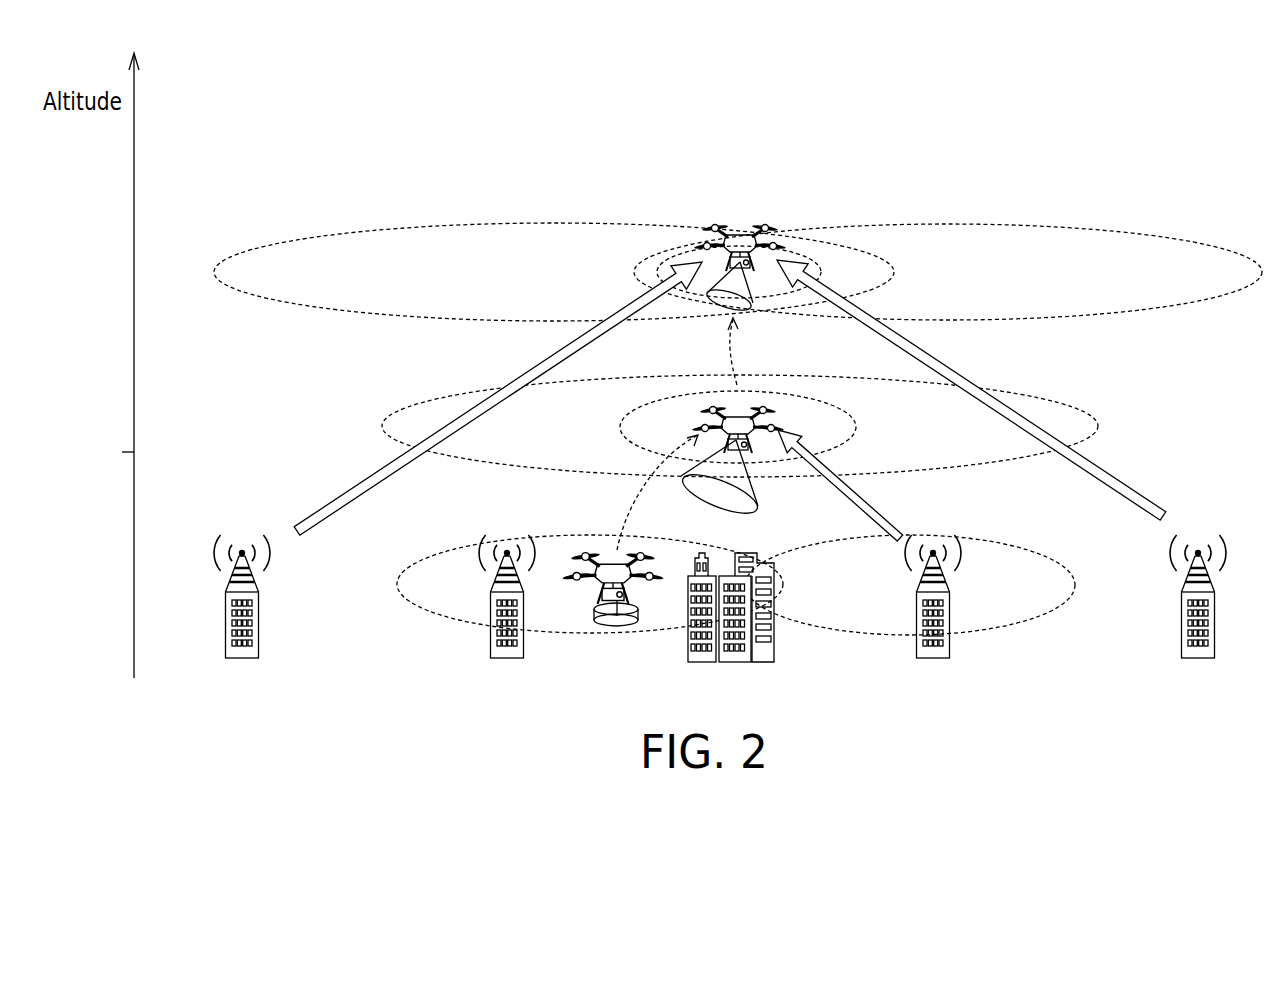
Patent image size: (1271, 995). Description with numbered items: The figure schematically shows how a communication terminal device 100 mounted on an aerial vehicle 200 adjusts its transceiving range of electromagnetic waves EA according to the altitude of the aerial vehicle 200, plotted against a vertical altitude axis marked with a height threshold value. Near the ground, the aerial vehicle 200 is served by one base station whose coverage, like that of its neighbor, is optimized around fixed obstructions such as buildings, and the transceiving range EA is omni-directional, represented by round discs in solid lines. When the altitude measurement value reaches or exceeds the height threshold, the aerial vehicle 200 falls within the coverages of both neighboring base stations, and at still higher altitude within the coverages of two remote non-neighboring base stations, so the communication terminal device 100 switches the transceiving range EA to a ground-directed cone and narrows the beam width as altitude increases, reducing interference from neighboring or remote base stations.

The communication terminal device 100 is at (750, 268).
The aerial vehicle 200 is at (737, 230).
The transceiving range of electromagnetic waves EA is at (737, 316).